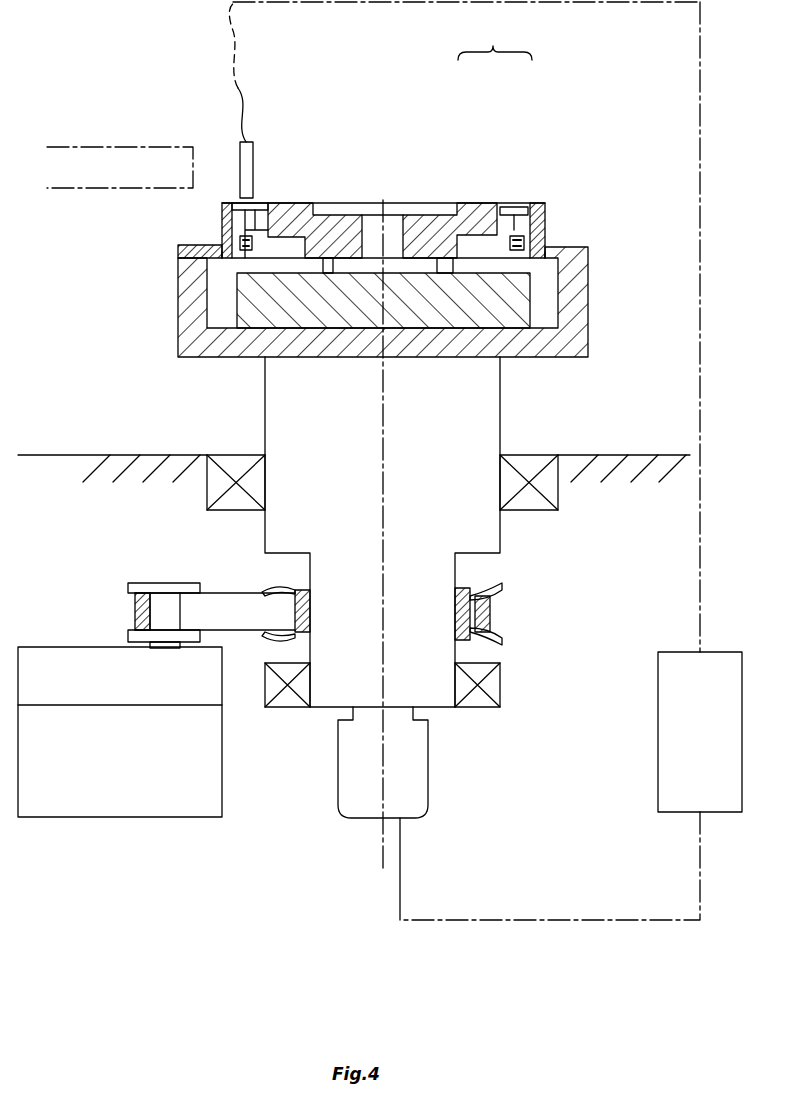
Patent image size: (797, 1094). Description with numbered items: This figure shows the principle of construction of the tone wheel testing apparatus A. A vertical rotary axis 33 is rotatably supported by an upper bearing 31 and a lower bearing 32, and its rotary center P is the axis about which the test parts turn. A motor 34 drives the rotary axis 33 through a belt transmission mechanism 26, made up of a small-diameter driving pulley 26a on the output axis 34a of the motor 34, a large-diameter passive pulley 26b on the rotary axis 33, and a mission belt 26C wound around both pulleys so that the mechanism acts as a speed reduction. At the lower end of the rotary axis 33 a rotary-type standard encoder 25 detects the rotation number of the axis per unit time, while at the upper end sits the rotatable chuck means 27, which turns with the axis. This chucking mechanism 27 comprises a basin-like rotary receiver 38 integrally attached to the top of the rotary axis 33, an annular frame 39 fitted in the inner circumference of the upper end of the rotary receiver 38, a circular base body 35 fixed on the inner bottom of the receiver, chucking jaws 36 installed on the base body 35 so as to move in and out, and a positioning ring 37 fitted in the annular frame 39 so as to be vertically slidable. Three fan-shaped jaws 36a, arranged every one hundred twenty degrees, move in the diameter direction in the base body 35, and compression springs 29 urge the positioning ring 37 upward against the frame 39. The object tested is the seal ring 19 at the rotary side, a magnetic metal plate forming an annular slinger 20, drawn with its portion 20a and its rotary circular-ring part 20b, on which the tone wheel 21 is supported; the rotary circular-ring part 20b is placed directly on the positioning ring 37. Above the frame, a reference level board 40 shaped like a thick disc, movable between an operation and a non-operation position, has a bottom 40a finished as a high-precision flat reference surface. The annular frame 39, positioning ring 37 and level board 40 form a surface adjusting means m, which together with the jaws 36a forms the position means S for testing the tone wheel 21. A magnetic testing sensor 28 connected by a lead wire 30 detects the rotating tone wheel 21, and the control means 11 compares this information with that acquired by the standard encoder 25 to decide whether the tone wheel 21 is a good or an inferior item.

The control means 11 is at (657, 732).
The seal ring at a rotary side 19 is at (262, 197).
The annular slinger 20 is at (463, 200).
The piston upper portion 20a is at (297, 200).
The rotary circular-ring part 20b is at (222, 207).
The tone wheel 21 is at (503, 200).
The rotary-type standard encoder 25 is at (412, 778).
The belt transmission mechanism 26 is at (215, 588).
The small-diameter driving pulley 26a is at (130, 586).
The large-diameter passive pulley 26b is at (288, 590).
The mission belt 26C is at (493, 617).
The rotatable chuck means 27 is at (632, 210).
The magnetic testing sensor 28 is at (247, 175).
The compression springs 29 is at (205, 322).
The lead wire 30 is at (248, 85).
The upper bearing 31 is at (545, 485).
The lower bearing 32 is at (500, 680).
The vertical rotary axis 33 is at (477, 518).
The motor 34 is at (200, 770).
The output axis 34a is at (165, 650).
The base body 35 is at (520, 300).
The chucking jaws 36 is at (472, 197).
The fan-shaped jaws 36a is at (382, 200).
The positioning ring 37 is at (540, 227).
The rotary receiver 38 is at (227, 337).
The annular frame 39 is at (190, 253).
The reference level board 40 is at (125, 147).
The bottom of the reference level board 40a is at (118, 194).
The tone wheel testing apparatus A is at (562, 138).
The position means S is at (495, 40).
The surface adjusting means m is at (538, 197).
The rotary center P is at (390, 420).